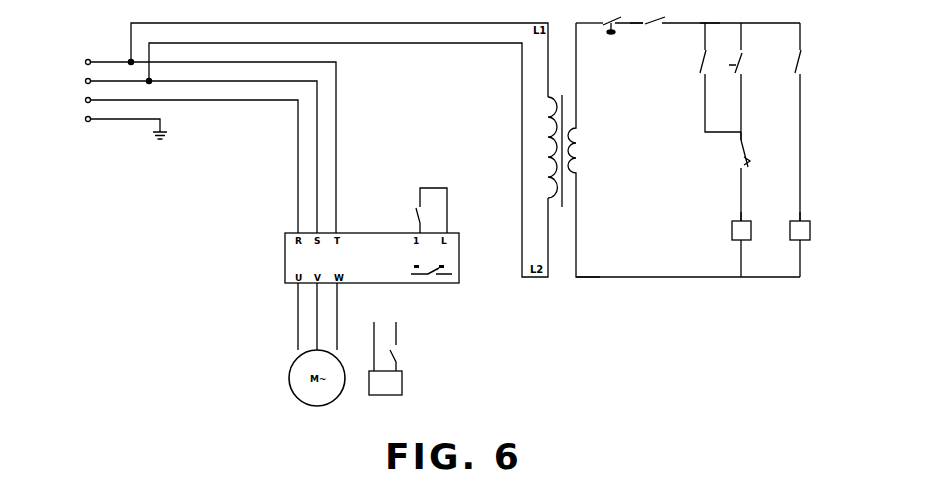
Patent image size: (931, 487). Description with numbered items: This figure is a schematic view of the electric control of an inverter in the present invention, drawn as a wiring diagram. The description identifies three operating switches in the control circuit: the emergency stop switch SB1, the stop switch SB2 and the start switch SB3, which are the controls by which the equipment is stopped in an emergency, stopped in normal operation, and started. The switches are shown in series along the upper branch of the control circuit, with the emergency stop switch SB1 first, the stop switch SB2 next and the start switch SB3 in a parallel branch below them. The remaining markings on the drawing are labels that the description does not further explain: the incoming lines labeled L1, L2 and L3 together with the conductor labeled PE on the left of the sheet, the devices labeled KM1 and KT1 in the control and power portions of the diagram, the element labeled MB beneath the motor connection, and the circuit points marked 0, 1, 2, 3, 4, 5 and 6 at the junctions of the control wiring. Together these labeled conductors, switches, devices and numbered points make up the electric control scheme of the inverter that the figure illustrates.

The power line L1 is at (308, 128).
The power line L2 is at (308, 160).
The power line L3 is at (183, 163).
The protective earth PE is at (117, 126).
The contactor KM1 is at (595, 197).
The time relay KT1 is at (764, 208).
The emergency stop switch SB1 is at (621, 33).
The stop switch SB2 is at (722, 33).
The start switch SB3 is at (727, 81).
The brake MB is at (385, 353).
The node 0 is at (588, 272).
The node 1 is at (589, 28).
The node 2 is at (636, 28).
The node 3 is at (710, 28).
The node 4 is at (736, 139).
The node 5 is at (737, 217).
The node 6 is at (798, 217).